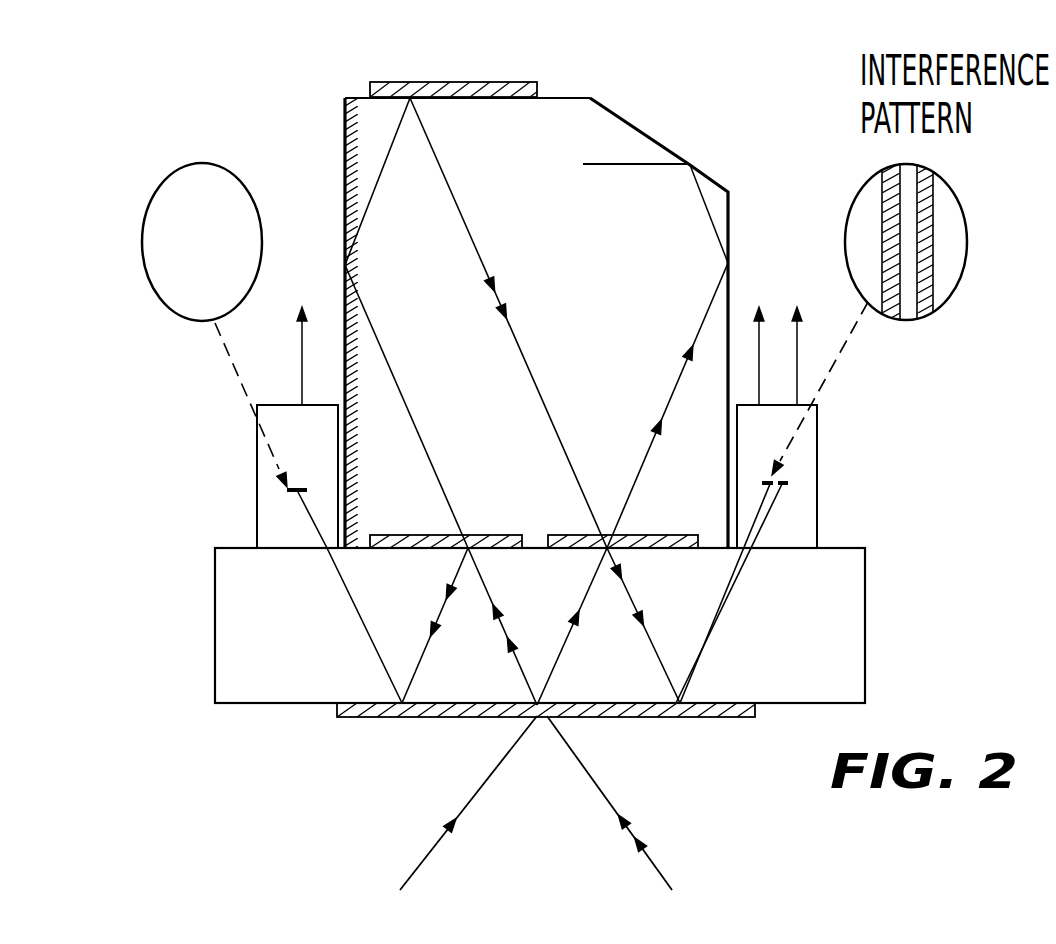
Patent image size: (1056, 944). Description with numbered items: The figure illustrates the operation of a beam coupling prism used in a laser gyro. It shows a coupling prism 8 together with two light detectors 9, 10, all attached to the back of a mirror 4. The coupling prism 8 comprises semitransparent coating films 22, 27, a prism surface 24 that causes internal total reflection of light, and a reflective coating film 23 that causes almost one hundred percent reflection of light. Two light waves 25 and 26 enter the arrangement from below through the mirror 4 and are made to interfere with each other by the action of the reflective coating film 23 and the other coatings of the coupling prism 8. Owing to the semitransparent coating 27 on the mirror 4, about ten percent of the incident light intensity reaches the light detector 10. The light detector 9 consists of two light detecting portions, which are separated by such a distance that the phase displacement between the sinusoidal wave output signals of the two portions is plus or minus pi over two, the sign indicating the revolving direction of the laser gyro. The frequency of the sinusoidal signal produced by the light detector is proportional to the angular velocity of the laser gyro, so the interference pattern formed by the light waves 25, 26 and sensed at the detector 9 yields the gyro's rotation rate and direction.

The mirror 4 is at (866, 580).
The coupling prism 8 is at (572, 127).
The light detector 9 is at (816, 490).
The light detector 10 is at (262, 480).
The semitransparent coating film 22 is at (667, 533).
The reflective coating film 23 is at (415, 82).
The prism surface 24 is at (343, 143).
The light wave 25 is at (652, 857).
The light wave 26 is at (427, 855).
The semitransparent coating film 27 is at (473, 533).